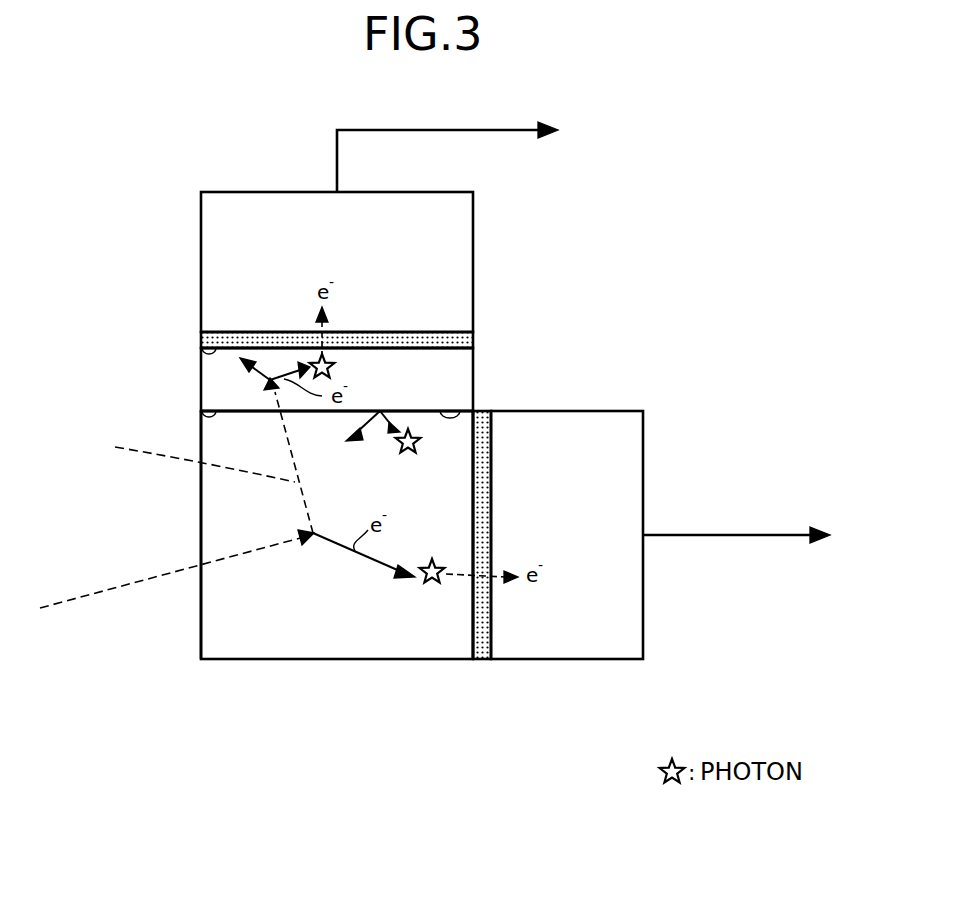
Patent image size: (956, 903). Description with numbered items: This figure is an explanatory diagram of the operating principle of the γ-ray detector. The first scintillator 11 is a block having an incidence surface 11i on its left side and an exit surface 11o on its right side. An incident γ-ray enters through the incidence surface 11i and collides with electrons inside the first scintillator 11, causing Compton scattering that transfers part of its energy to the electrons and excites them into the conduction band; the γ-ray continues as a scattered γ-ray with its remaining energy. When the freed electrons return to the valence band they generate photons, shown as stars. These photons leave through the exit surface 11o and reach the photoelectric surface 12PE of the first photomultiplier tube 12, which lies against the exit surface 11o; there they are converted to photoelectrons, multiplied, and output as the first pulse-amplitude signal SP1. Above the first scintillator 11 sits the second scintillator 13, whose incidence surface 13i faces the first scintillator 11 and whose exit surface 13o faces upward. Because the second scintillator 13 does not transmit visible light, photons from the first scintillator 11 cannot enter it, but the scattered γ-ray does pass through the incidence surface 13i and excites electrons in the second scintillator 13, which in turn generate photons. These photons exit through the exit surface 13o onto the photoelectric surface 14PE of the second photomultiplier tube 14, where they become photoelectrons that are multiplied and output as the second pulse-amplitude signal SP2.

The first scintillator 11 is at (343, 659).
The incidence surface 11i is at (201, 631).
The exit surface 11o is at (473, 638).
The first photomultiplier tube 12 is at (617, 411).
The photoelectric surface 12PE is at (483, 659).
The second scintillator 13 is at (473, 380).
The incidence surface 13i is at (202, 413).
The exit surface 13o is at (202, 350).
The second photomultiplier tube 14 is at (473, 238).
The photoelectric surface 14PE is at (473, 343).
The first pulse-amplitude signal SP1 is at (730, 535).
The second pulse-amplitude signal SP2 is at (440, 130).